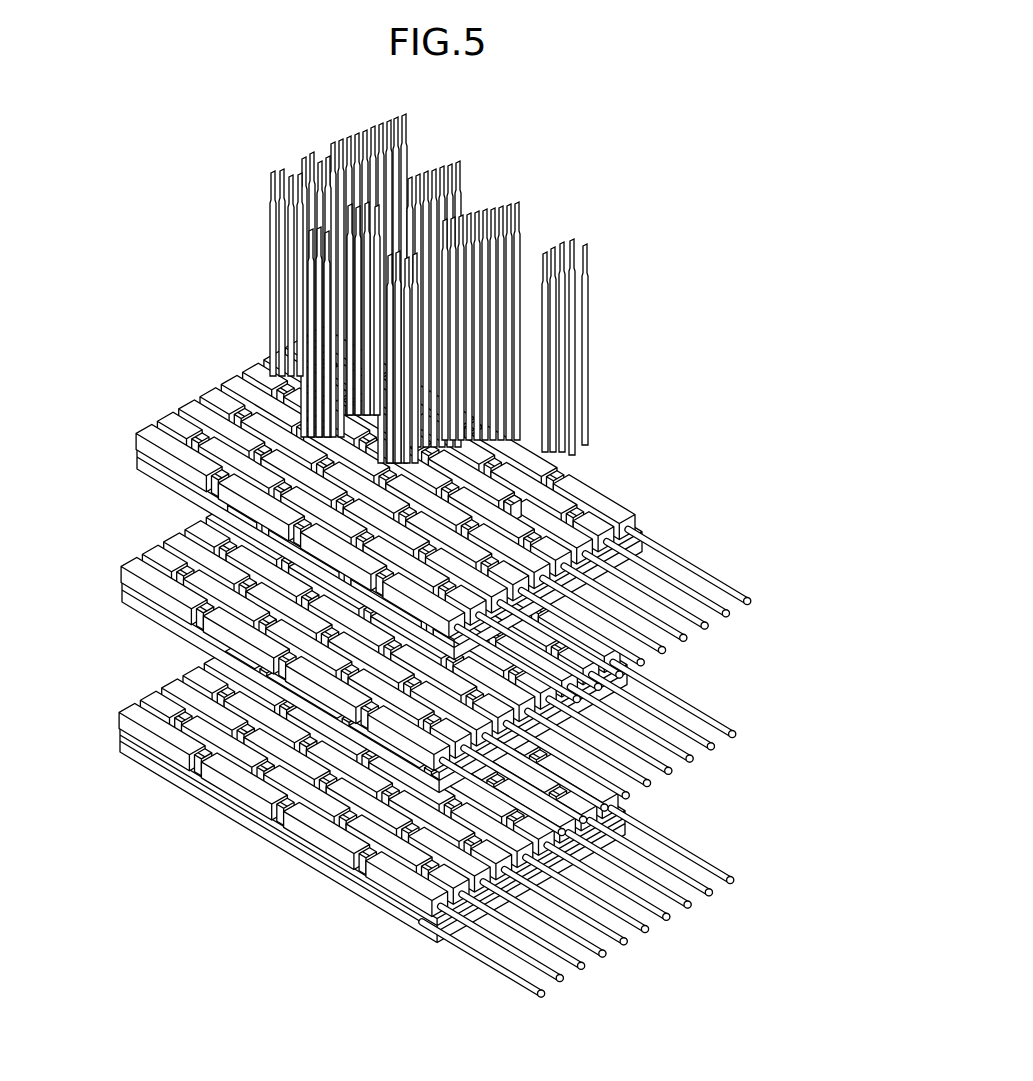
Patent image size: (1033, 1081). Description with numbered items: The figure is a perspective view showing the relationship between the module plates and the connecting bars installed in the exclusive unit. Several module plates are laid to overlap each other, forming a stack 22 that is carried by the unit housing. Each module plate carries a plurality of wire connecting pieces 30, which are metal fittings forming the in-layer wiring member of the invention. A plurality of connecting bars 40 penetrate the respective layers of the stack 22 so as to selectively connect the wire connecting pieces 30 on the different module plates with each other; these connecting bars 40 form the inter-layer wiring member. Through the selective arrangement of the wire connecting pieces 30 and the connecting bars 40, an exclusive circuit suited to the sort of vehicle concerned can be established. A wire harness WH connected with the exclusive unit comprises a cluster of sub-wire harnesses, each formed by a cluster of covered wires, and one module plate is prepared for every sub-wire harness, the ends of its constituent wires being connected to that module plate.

The stack 22 is at (350, 662).
The wire connecting piece 30 is at (520, 492).
The connecting bar 40 is at (592, 333).
The wire harness WH is at (449, 555).